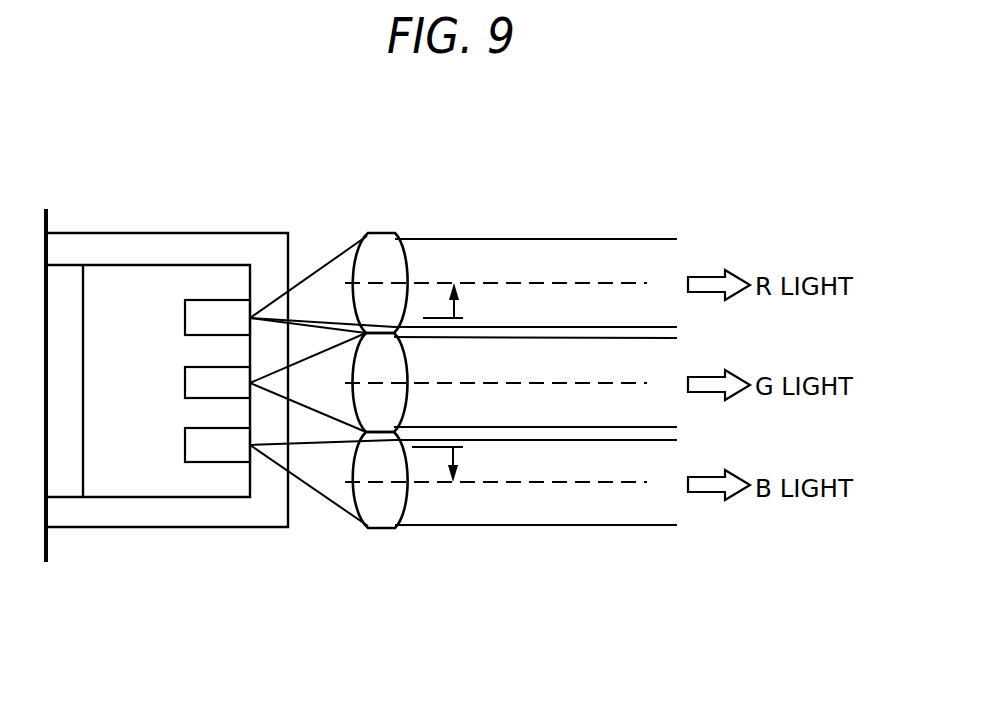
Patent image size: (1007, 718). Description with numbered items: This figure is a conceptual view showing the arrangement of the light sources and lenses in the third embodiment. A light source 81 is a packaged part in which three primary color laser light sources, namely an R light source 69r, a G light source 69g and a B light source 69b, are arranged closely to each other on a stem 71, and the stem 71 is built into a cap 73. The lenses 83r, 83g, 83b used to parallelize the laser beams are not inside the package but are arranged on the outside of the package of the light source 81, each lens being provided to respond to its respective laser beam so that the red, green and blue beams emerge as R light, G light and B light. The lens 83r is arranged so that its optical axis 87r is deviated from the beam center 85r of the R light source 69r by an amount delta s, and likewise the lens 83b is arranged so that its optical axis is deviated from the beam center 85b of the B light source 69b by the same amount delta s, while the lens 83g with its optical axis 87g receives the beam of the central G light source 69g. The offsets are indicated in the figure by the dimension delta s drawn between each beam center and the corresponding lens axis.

The light source 81 is at (204, 169).
The stem 71 is at (160, 275).
The cap 73 is at (235, 233).
The R light source 69r is at (185, 318).
The G light source 69g is at (185, 383).
The B light source 69b is at (185, 446).
The lens 83r is at (378, 233).
The lens 83g is at (397, 404).
The lens 83b is at (376, 515).
The beam center 85r is at (423, 318).
The beam center 85b is at (422, 447).
The optical axis 87r is at (588, 283).
The optical axis 87g is at (573, 483).